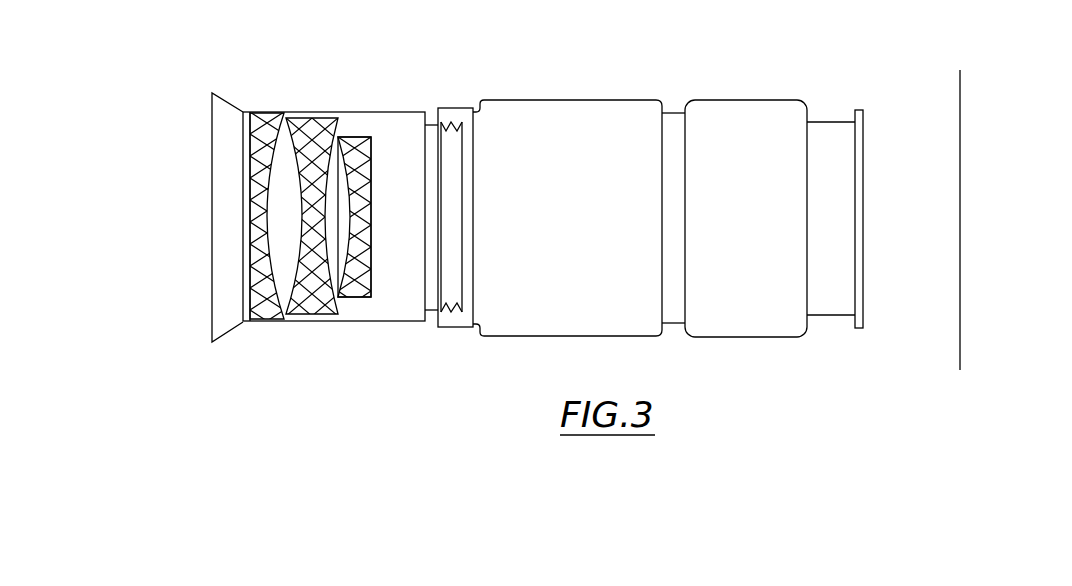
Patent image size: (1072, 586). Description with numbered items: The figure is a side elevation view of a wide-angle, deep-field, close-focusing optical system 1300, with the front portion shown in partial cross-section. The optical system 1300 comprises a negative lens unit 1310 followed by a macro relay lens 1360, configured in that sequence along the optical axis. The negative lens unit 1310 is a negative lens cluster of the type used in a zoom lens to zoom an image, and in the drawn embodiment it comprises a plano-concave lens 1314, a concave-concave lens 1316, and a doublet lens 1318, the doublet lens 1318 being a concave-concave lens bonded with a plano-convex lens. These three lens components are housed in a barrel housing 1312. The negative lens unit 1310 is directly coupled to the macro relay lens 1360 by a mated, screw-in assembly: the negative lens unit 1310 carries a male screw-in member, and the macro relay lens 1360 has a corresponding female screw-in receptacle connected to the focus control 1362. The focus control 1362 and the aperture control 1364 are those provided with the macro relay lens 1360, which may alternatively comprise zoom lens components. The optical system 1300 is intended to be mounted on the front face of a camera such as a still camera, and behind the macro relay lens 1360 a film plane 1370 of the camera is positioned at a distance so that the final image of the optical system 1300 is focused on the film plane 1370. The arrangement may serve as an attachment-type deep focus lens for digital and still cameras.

The optical system 1300 is at (521, 217).
The negative lens unit 1310 is at (291, 216).
The barrel housing 1312 is at (355, 112).
The plano-concave lens 1314 is at (265, 278).
The concave-concave lens 1316 is at (317, 300).
The doublet lens 1318 is at (357, 288).
The macro relay lens 1360 is at (659, 224).
The focus control 1362 is at (545, 336).
The aperture control 1364 is at (737, 337).
The film plane 1370 is at (960, 302).